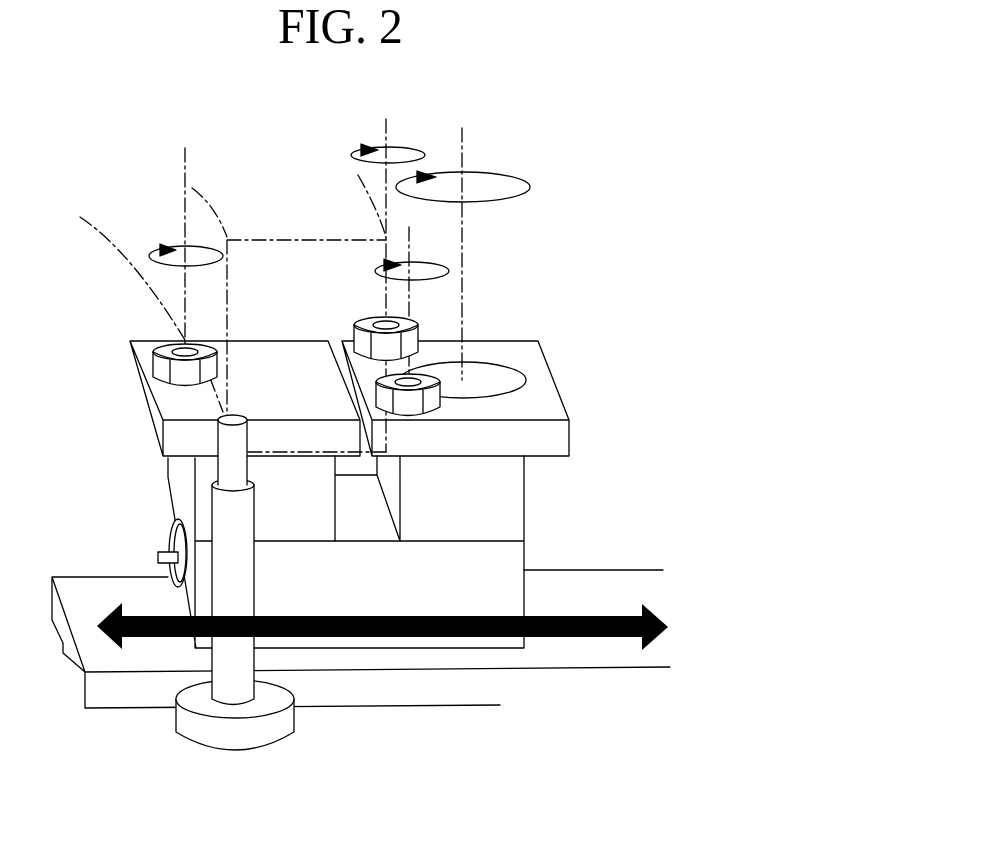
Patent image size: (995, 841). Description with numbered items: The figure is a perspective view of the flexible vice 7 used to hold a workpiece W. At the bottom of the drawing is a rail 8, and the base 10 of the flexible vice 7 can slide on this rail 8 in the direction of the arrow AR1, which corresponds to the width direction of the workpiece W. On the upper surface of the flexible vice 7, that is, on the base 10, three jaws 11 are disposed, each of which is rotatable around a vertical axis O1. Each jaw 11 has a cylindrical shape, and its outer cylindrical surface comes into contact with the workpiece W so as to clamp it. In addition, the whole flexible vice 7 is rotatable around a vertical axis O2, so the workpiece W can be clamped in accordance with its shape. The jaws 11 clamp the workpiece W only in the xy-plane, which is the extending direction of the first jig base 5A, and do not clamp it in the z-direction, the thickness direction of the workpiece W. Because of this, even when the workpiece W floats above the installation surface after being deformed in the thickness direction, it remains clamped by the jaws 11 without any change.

The first jig base 5A is at (90, 783).
The flexible vice 7 is at (595, 370).
The rail 8 is at (74, 586).
The base 10 is at (524, 552).
The jaw 11 is at (358, 332).
The workpiece W is at (259, 197).
The vertical axis O1 is at (185, 198).
The vertical axis O2 is at (462, 240).
The arrow AR1 is at (580, 640).